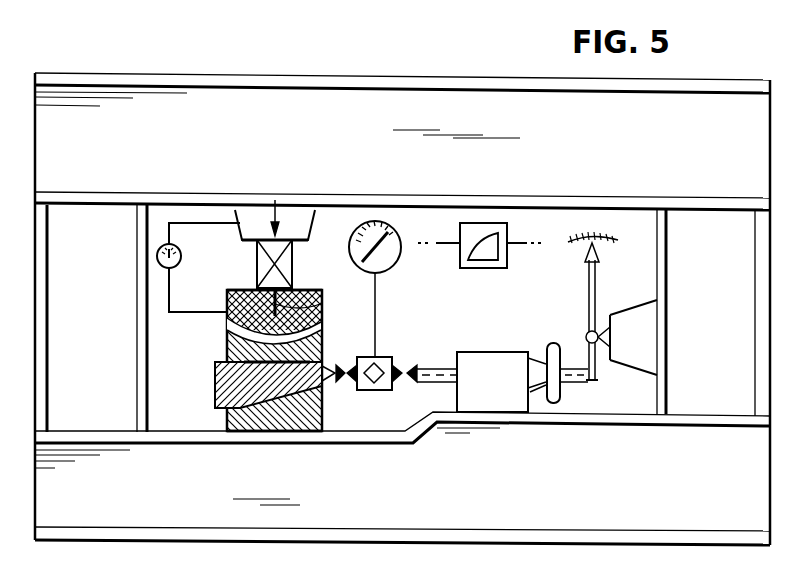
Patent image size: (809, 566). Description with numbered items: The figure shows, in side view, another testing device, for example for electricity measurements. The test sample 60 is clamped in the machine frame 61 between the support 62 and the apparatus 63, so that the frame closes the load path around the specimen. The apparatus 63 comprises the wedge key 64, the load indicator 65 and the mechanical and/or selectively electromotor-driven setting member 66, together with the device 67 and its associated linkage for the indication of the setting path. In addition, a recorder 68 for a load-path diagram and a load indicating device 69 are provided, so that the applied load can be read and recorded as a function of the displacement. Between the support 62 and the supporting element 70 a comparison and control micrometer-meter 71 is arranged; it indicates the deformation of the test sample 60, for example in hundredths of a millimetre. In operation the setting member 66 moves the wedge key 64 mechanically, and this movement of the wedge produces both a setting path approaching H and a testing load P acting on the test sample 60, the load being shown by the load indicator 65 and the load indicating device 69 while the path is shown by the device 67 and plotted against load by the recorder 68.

The test sample 60 is at (263, 263).
The machine frame 61 is at (207, 152).
The support 62 is at (290, 216).
The apparatus 63 is at (224, 346).
The wedge key 64 is at (232, 392).
The load indicator 65 is at (386, 392).
The setting member 66 is at (497, 360).
The device for indication of the setting path 67 is at (598, 275).
The recorder 68 is at (478, 228).
The load indicating device 69 is at (385, 222).
The supporting element 70 is at (238, 300).
The comparison and control micrometer-meter 71 is at (157, 257).
The testing load P is at (275, 208).
The setting path H is at (322, 304).